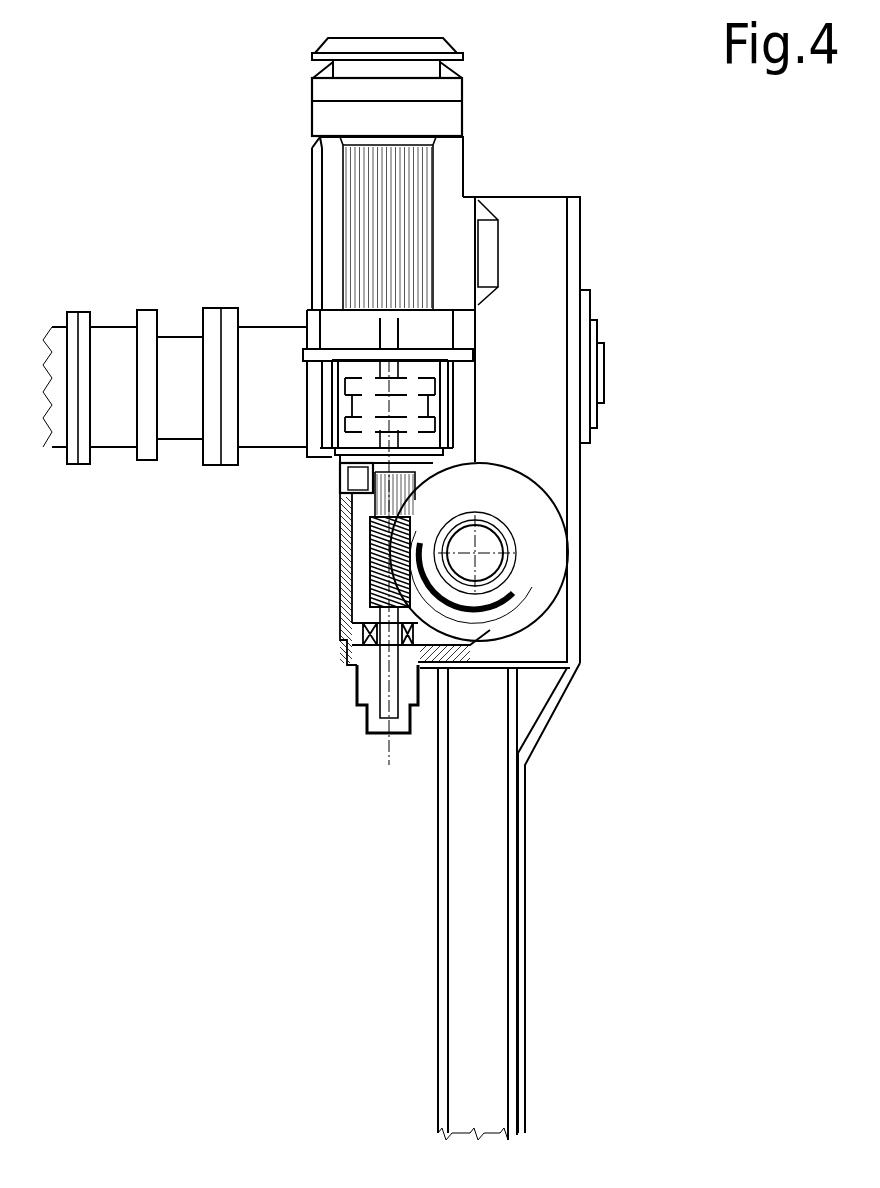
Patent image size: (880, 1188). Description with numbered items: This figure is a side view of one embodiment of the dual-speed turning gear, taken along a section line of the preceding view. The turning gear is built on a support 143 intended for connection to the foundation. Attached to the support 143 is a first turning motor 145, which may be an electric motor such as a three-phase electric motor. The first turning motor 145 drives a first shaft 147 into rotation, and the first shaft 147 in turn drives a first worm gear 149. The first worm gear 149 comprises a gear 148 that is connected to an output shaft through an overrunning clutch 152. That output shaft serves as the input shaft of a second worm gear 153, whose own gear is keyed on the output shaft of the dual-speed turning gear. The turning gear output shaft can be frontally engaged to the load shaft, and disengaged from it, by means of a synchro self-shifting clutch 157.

The support 143 is at (497, 898).
The first turning motor 145 is at (330, 100).
The first shaft 147 is at (372, 588).
The gear 148 is at (472, 612).
The first worm gear 149 is at (540, 557).
The overrunning clutch 152 is at (500, 614).
The second worm gear 153 is at (545, 215).
The synchro self-shifting clutch 157 is at (261, 337).